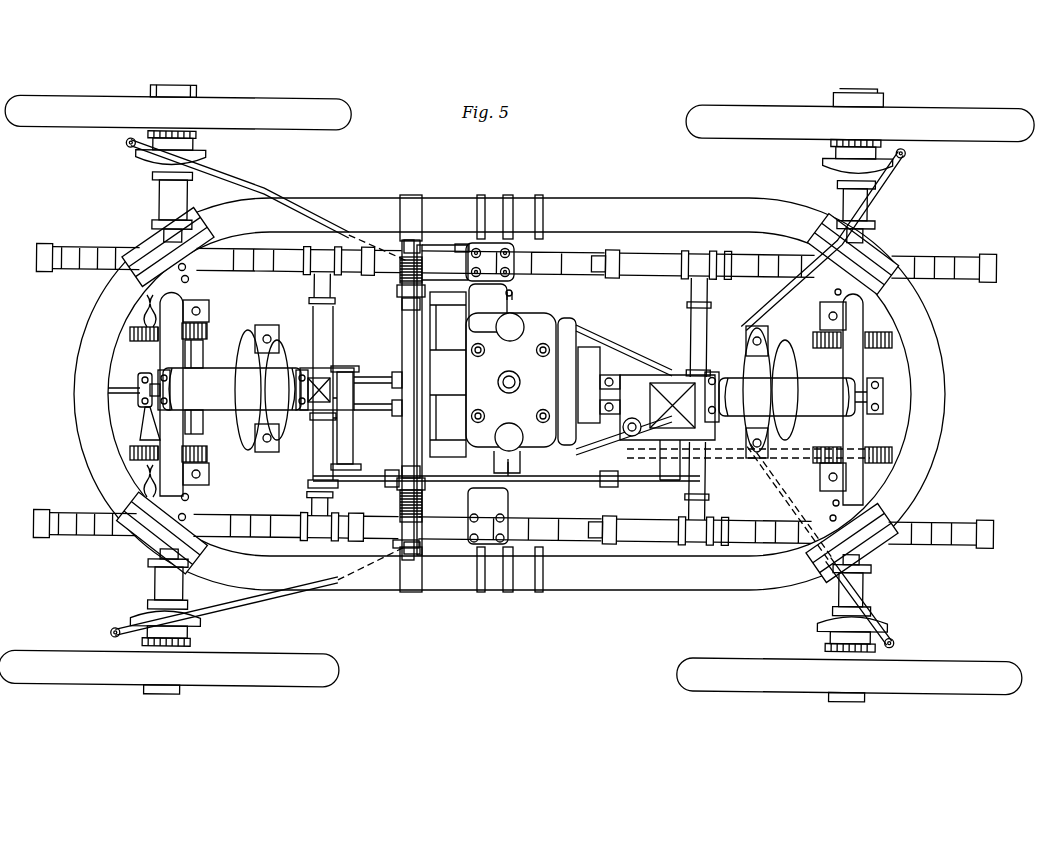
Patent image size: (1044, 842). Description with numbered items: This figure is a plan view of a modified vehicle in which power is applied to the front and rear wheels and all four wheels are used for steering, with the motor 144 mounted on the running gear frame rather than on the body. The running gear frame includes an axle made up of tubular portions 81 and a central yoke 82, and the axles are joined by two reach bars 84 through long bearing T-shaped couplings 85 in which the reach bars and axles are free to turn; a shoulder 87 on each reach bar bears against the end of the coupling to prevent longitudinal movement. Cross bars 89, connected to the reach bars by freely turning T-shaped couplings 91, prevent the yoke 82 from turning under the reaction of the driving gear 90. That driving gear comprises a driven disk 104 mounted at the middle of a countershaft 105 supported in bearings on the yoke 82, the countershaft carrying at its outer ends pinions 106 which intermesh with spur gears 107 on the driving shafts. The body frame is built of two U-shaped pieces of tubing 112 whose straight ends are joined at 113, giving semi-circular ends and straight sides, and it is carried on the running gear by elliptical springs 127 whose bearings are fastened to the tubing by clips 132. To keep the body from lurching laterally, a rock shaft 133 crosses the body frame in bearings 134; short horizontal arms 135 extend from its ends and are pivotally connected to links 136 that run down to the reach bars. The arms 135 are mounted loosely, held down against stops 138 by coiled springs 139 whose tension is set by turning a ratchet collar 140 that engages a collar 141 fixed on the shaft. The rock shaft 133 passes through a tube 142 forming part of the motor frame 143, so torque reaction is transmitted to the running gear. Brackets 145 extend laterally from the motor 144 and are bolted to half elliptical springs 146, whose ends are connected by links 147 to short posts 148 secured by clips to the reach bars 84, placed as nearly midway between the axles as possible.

The tubular portions 81 is at (170, 193).
The central yoke 82 is at (188, 310).
The reach bars 84 is at (650, 268).
The T-shaped couplings 85 is at (189, 280).
The shoulder 87 is at (200, 296).
The cross bars 89 is at (320, 318).
The driving gear 90 is at (233, 389).
The T-shaped couplings 91 is at (337, 283).
The driven disk 104 is at (146, 389).
The countershaft 105 is at (192, 355).
The pinions 106 is at (208, 336).
The spur gears 107 is at (140, 335).
The body frame tubing 112 is at (112, 372).
The joint 113 is at (505, 202).
The springs 127 is at (86, 255).
The clips 132 is at (135, 252).
The rock shaft 133 is at (407, 326).
The bearings 134 is at (403, 550).
The horizontal arms 135 is at (444, 252).
The links 136 is at (484, 600).
The stops 138 is at (409, 241).
The coiled springs 139 is at (405, 273).
The collar 140 is at (402, 292).
The collar 141 is at (403, 304).
The tube 142 is at (420, 324).
The motor frame 143 is at (494, 298).
The motor 144 is at (587, 380).
The brackets 145 is at (490, 414).
The half elliptical spring 146 is at (559, 262).
The links 147 is at (596, 273).
The short posts 148 is at (607, 274).